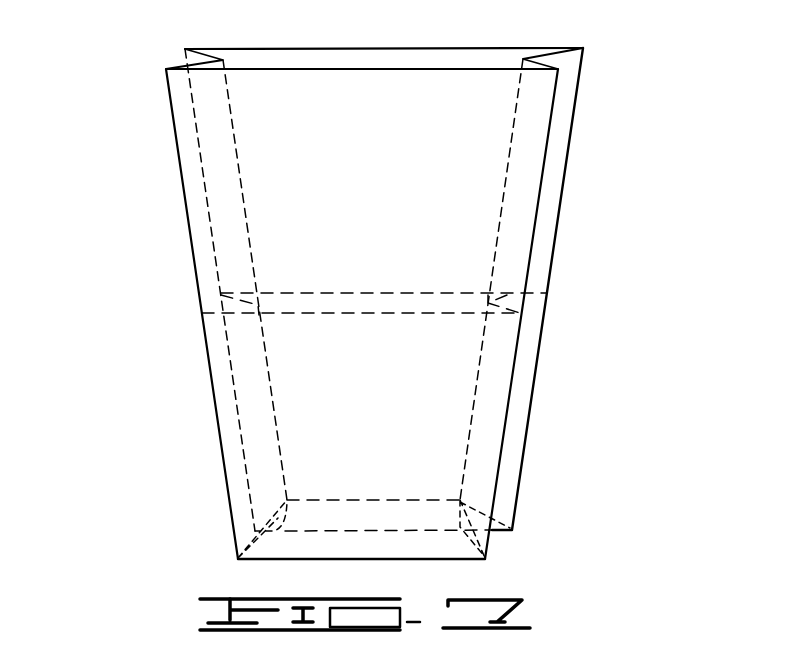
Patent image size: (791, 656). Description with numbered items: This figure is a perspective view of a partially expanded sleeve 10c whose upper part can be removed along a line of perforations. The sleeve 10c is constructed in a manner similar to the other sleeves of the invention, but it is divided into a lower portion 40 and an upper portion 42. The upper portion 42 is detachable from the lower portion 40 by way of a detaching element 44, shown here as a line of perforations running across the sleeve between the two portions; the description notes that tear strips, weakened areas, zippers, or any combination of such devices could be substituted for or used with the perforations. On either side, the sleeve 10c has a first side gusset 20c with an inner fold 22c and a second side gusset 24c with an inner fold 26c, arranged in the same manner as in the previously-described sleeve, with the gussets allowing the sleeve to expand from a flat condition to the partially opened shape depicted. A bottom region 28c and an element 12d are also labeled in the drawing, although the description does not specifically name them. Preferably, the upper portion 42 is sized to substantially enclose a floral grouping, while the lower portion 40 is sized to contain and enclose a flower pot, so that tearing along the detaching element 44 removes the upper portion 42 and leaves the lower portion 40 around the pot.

The sleeve 10c is at (391, 291).
The base 12d is at (208, 655).
The first side gusset 20c is at (174, 291).
The inner fold 22c is at (238, 160).
The second side gusset 24c is at (578, 303).
The inner fold 26c is at (507, 177).
The bottom wall 28c is at (492, 532).
The lower portion 40 is at (172, 401).
The upper portion 42 is at (150, 236).
The detaching element 44 is at (455, 318).